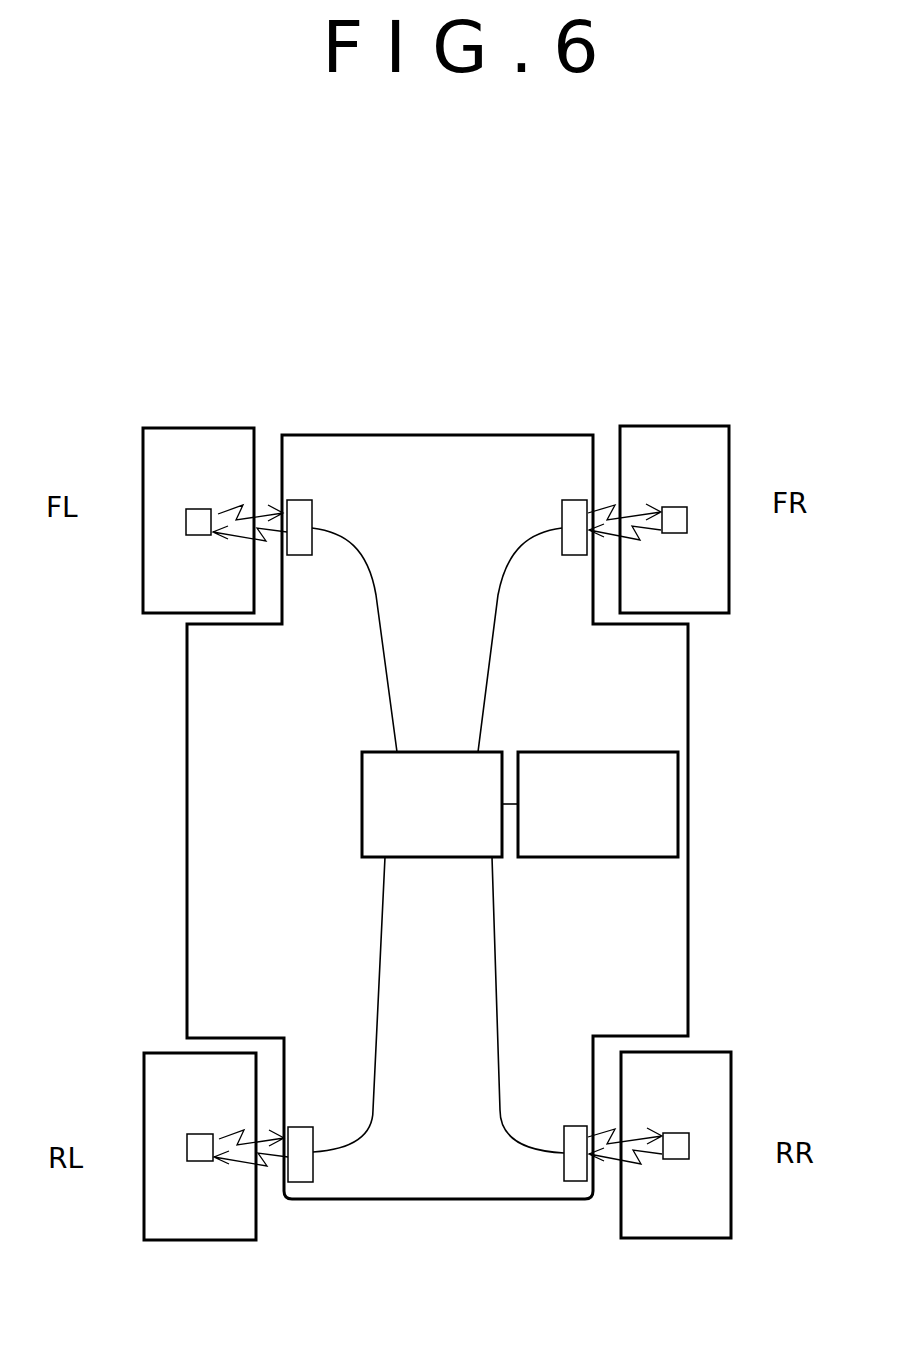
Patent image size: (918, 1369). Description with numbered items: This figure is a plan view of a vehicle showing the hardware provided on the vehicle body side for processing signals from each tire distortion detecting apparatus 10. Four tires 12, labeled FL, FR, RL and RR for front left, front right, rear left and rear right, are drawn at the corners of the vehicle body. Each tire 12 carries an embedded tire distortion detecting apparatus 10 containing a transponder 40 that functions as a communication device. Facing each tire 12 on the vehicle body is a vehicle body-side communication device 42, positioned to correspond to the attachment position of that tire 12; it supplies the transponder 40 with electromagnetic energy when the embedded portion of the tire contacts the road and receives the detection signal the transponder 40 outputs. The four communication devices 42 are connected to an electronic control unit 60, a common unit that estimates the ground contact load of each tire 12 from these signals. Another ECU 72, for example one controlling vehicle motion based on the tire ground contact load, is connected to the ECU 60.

The tire distortion detecting apparatus 10 is at (198, 519).
The tire 12 is at (165, 480).
The transponder 40 is at (679, 1134).
The vehicle body-side communication device 42 is at (303, 513).
The electronic control unit (ECU) 60 is at (383, 762).
The another ECU 72 is at (667, 823).